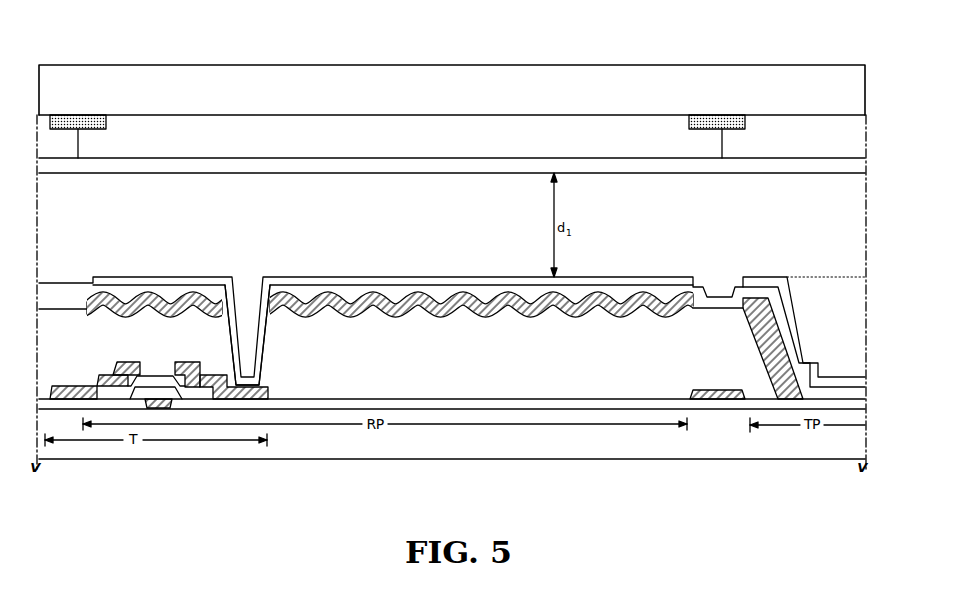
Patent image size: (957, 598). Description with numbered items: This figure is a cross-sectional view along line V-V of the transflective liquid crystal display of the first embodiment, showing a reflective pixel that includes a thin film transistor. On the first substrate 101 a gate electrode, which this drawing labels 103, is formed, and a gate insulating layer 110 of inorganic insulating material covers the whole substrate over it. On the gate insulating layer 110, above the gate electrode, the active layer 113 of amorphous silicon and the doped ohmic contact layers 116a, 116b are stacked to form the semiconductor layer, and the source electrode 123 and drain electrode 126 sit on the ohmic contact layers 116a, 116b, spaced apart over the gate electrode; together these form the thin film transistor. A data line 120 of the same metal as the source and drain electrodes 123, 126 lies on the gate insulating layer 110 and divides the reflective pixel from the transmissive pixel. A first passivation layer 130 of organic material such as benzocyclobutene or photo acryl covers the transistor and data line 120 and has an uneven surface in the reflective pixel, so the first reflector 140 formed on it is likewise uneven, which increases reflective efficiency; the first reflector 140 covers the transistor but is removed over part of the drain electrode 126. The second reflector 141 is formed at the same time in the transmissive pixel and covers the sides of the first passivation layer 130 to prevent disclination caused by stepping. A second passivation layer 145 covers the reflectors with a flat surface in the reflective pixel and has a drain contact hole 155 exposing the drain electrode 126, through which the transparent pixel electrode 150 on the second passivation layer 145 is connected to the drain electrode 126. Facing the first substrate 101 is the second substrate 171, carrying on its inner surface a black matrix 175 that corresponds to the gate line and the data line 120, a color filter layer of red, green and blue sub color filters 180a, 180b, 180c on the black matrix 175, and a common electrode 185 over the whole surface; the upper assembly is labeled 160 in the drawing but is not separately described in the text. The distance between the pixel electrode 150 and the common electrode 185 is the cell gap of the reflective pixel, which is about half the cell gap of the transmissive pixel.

The first substrate 101 is at (466, 452).
The gate electrode 103 is at (170, 400).
The gate insulating layer 110 is at (360, 400).
The active layer 113 is at (155, 382).
The ohmic contact layer 116a is at (115, 364).
The ohmic contact layer 116b is at (198, 363).
The data line 120 is at (710, 388).
The source electrode 123 is at (102, 377).
The drain electrode 126 is at (267, 384).
The first passivation layer 130 is at (370, 318).
The first reflector 140 is at (153, 303).
The second reflector 141 is at (778, 340).
The second passivation layer 145 is at (441, 292).
The pixel electrode 150 is at (323, 281).
The drain contact hole 155 is at (248, 280).
The upper panel 160 is at (848, 213).
The second substrate 171 is at (486, 88).
The black matrix 175 is at (95, 118).
The red sub color filter 180a is at (70, 140).
The green sub color filter 180b is at (533, 140).
The blue sub color filter 180c is at (821, 140).
The common electrode 185 is at (616, 163).